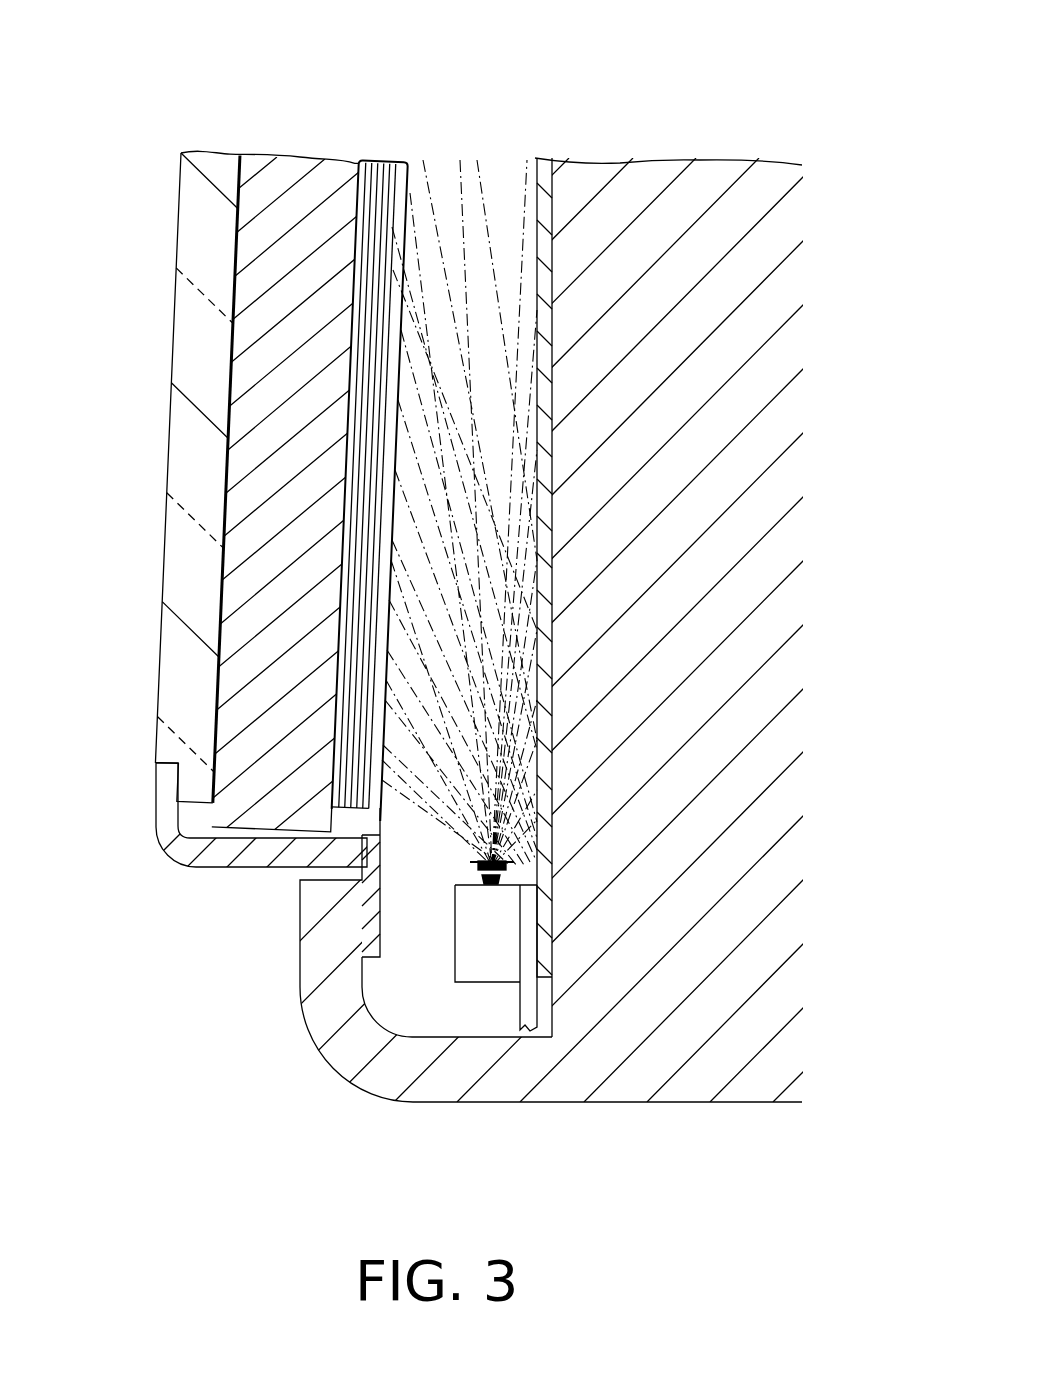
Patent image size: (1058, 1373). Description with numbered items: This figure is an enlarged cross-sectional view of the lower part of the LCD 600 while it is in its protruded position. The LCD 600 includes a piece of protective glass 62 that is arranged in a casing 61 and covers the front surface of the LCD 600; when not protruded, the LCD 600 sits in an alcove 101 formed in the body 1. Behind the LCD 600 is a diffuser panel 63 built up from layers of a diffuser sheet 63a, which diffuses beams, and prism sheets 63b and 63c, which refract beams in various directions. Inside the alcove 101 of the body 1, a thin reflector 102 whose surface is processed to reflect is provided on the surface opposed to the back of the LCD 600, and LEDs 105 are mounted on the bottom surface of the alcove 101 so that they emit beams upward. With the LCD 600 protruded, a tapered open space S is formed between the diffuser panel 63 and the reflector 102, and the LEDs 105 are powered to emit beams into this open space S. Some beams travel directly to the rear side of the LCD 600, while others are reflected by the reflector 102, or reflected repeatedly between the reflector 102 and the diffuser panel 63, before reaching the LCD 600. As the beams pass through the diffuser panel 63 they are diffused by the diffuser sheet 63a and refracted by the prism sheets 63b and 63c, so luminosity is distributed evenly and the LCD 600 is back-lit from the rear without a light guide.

The body 1 is at (735, 1052).
The alcove 101 is at (375, 1008).
The reflector 102 is at (545, 945).
The LED 105 is at (483, 963).
The open space S is at (479, 206).
The casing 61 is at (228, 857).
The protective glass 62 is at (172, 661).
The LCD 600 is at (275, 342).
The diffuser panel 63 is at (390, 412).
The diffuser sheet 63a is at (404, 160).
The prism sheet 63b is at (381, 159).
The prism sheet 63c is at (368, 158).